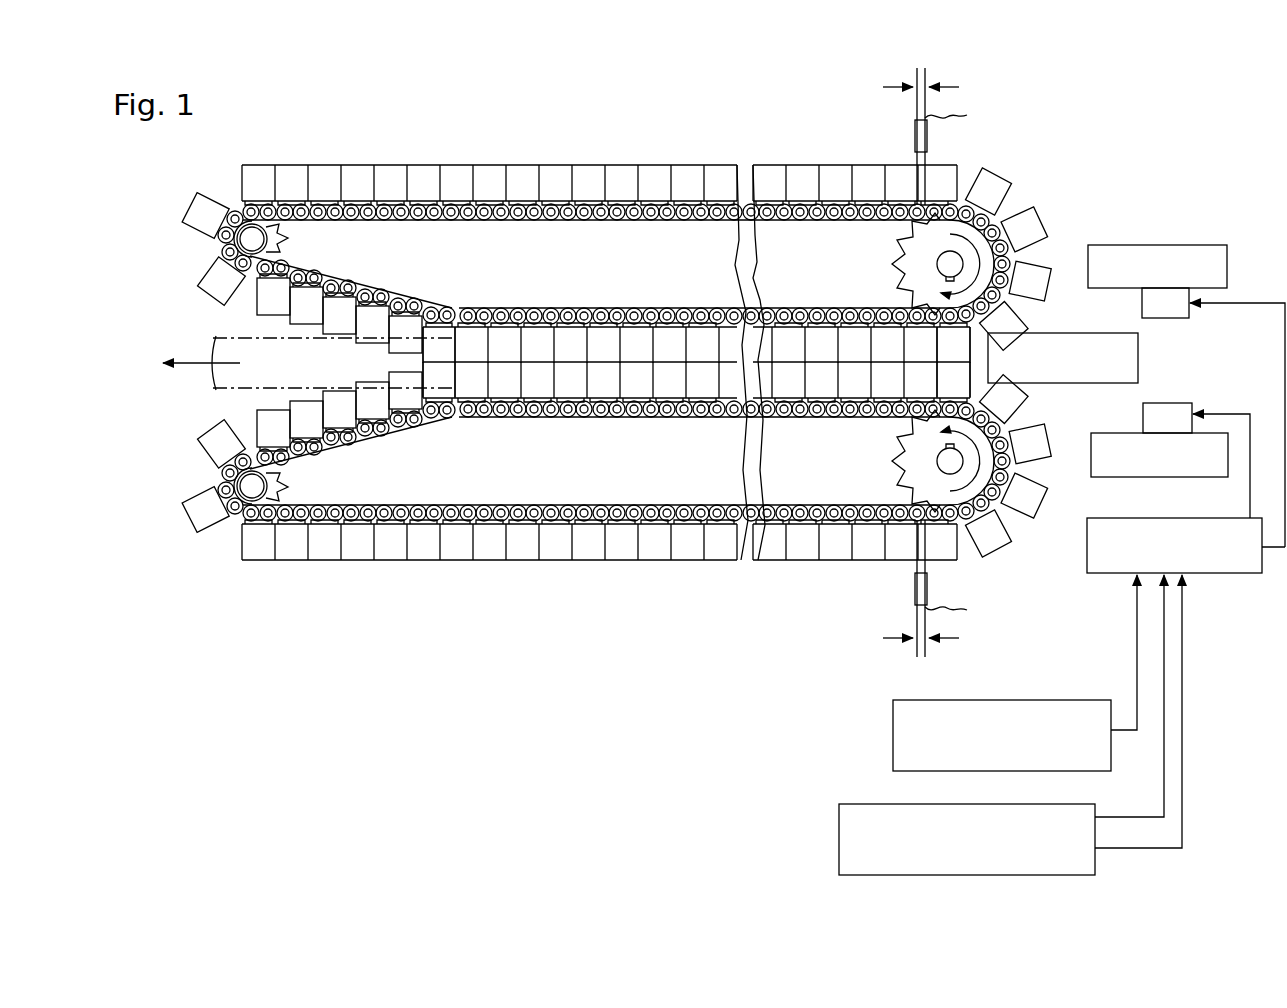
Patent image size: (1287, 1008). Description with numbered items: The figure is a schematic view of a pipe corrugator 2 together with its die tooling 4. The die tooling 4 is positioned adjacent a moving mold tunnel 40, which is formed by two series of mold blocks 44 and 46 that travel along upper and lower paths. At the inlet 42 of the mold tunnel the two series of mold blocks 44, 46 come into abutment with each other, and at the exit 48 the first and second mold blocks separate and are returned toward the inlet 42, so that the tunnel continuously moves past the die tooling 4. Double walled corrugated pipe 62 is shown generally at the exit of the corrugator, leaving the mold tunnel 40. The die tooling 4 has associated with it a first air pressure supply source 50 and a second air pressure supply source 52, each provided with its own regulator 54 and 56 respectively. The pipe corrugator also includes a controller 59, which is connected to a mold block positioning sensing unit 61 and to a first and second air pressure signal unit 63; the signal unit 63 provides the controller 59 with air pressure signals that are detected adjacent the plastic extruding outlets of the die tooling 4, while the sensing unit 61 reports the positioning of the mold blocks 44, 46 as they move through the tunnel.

The pipe corrugator 2 is at (731, 124).
The die tooling 4 is at (1140, 363).
The moving mold tunnel 40 is at (736, 352).
The inlet 42 is at (962, 348).
The mold blocks 44 is at (484, 190).
The mold blocks 46 is at (560, 540).
The exit 48 is at (402, 357).
The first air pressure supply source 50 is at (1128, 440).
The second air pressure supply source 52 is at (1168, 245).
The regulator 54 is at (1175, 415).
The regulator 56 is at (1167, 308).
The controller 59 is at (1215, 573).
The mold block positioning sensing unit 61 is at (1000, 700).
The double walled corrugated pipe 62 is at (250, 373).
The first and second air pressure signal unit 63 is at (855, 840).